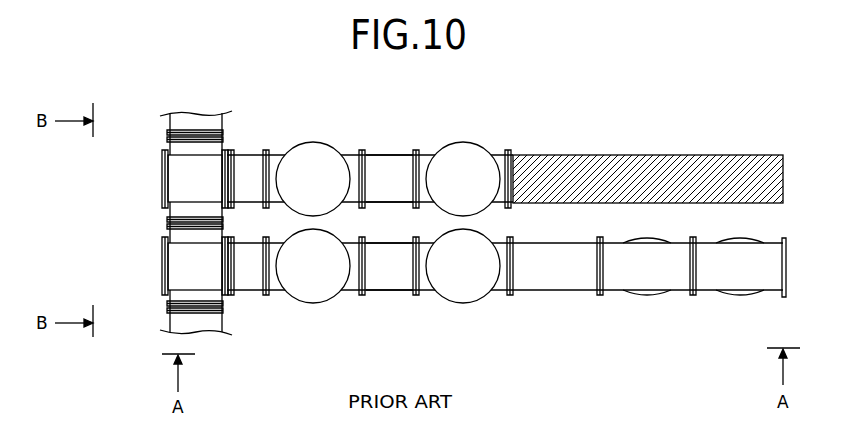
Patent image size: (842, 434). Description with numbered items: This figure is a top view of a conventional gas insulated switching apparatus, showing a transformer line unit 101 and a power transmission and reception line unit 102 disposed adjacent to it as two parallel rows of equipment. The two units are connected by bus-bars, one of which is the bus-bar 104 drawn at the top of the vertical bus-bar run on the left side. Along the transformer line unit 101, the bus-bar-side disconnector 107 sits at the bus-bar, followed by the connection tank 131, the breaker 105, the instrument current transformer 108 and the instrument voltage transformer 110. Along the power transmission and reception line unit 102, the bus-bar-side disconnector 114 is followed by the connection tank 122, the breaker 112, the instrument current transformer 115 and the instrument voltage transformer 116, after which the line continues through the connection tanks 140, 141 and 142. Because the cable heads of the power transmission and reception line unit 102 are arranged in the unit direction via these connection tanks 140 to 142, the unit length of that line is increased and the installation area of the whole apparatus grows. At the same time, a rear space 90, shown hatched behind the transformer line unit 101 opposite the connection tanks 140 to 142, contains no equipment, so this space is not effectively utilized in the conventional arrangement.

The rear space 90 is at (654, 155).
The transformer line unit 101 is at (92, 178).
The power transmission and reception line unit 102 is at (92, 265).
The bus-bar 104 is at (180, 122).
The breaker 105 is at (311, 142).
The bus-bar-side disconnector 107 is at (178, 178).
The instrument current transformer 108 is at (386, 155).
The instrument voltage transformer 110 is at (461, 142).
The breaker 112 is at (313, 303).
The bus-bar-side disconnector 114 is at (178, 266).
The instrument current transformer 115 is at (386, 291).
The instrument voltage transformer 116 is at (463, 303).
The connection tank 122 is at (251, 291).
The connection tank 131 is at (251, 155).
The connection tank 140 is at (553, 292).
The connection tank 141 is at (613, 292).
The connection tank 142 is at (708, 292).